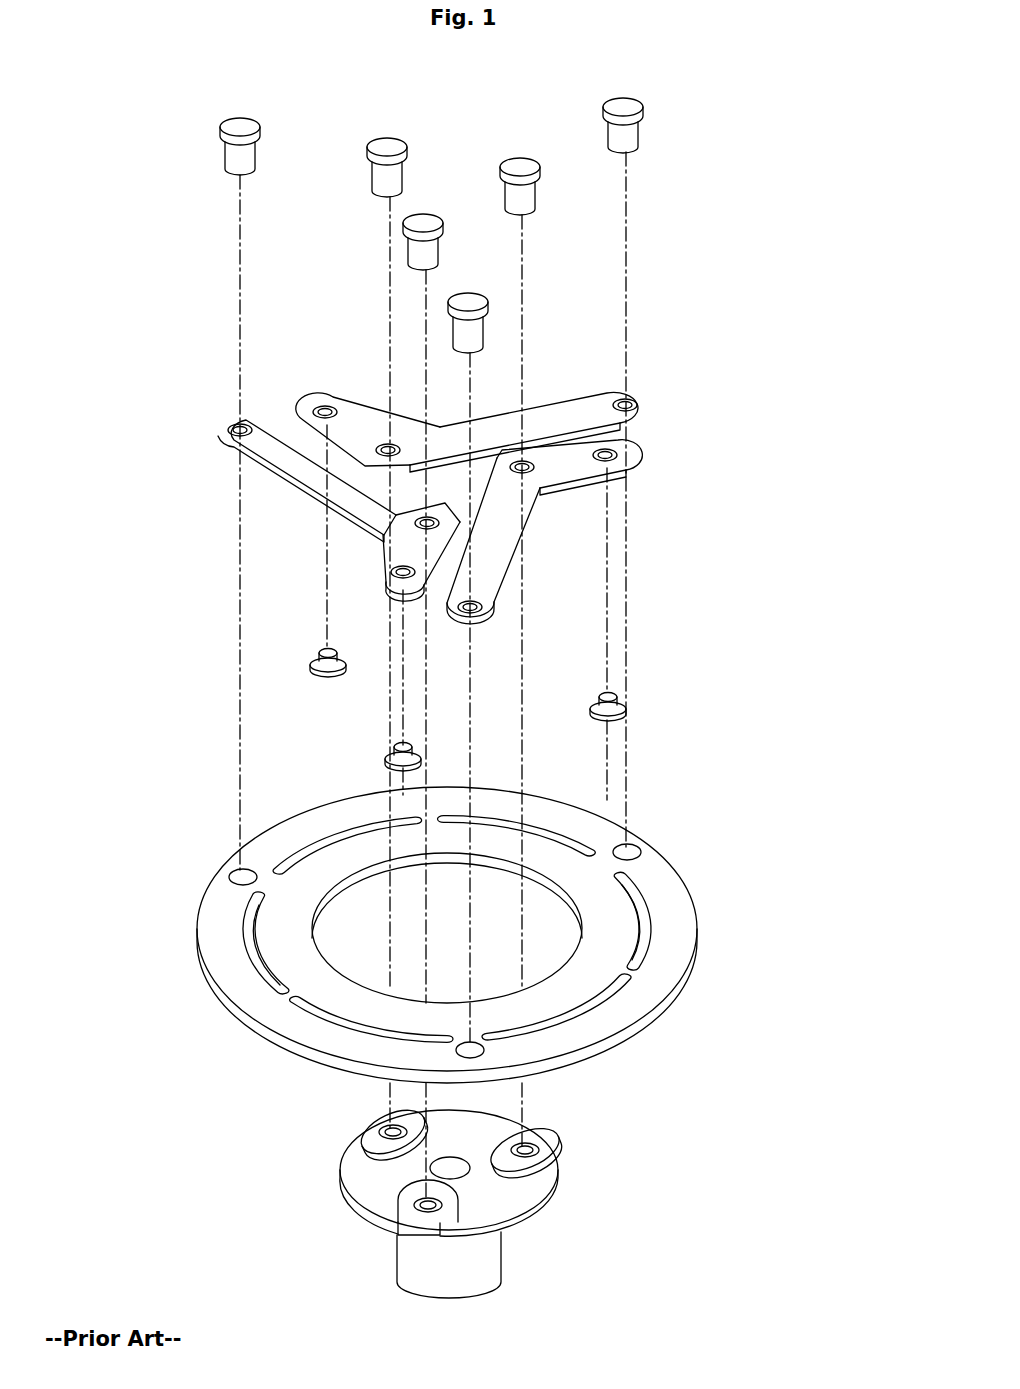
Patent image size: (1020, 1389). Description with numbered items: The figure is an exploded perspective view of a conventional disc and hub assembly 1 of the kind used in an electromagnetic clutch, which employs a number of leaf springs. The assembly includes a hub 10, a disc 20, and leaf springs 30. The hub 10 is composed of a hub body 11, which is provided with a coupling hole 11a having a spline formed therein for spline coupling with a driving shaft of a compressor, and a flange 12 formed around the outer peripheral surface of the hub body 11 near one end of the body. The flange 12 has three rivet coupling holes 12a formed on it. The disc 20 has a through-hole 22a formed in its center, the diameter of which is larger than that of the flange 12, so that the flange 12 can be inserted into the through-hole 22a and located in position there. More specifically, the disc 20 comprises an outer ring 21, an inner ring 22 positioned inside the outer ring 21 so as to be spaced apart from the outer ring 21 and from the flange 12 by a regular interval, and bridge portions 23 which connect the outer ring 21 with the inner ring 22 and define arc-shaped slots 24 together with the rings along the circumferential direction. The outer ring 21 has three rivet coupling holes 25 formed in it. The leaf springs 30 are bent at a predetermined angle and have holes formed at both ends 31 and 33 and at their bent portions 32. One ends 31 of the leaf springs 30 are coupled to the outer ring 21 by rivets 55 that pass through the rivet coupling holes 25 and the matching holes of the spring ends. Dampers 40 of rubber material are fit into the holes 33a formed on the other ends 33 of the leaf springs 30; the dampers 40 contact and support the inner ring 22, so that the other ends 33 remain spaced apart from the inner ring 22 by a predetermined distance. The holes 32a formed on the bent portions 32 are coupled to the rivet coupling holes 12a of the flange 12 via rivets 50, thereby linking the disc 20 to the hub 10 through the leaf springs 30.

The wafer holder assembly 1 is at (778, 735).
The hub 10 is at (326, 1228).
The hub body 11 is at (495, 1256).
The coupling hole 11a is at (455, 1168).
The flange 12 is at (540, 1183).
The rivet coupling holes 12a is at (393, 1130).
The disc 20 is at (170, 1035).
The outer ring 21 is at (680, 919).
The inner ring 22 is at (603, 910).
The through-hole 22a is at (338, 930).
The bridge portions 23 is at (640, 967).
The arc-shaped slots 24 is at (614, 985).
The rivet coupling holes 25 is at (632, 850).
The leaf springs 30 is at (188, 456).
The one ends 31 is at (604, 410).
The bent portions 32 is at (385, 443).
The holes 32a is at (430, 515).
The other ends 33 is at (330, 406).
The holes 33a is at (318, 408).
The dampers 40 is at (322, 658).
The rivets 50 is at (520, 162).
The rivets 55 is at (235, 128).